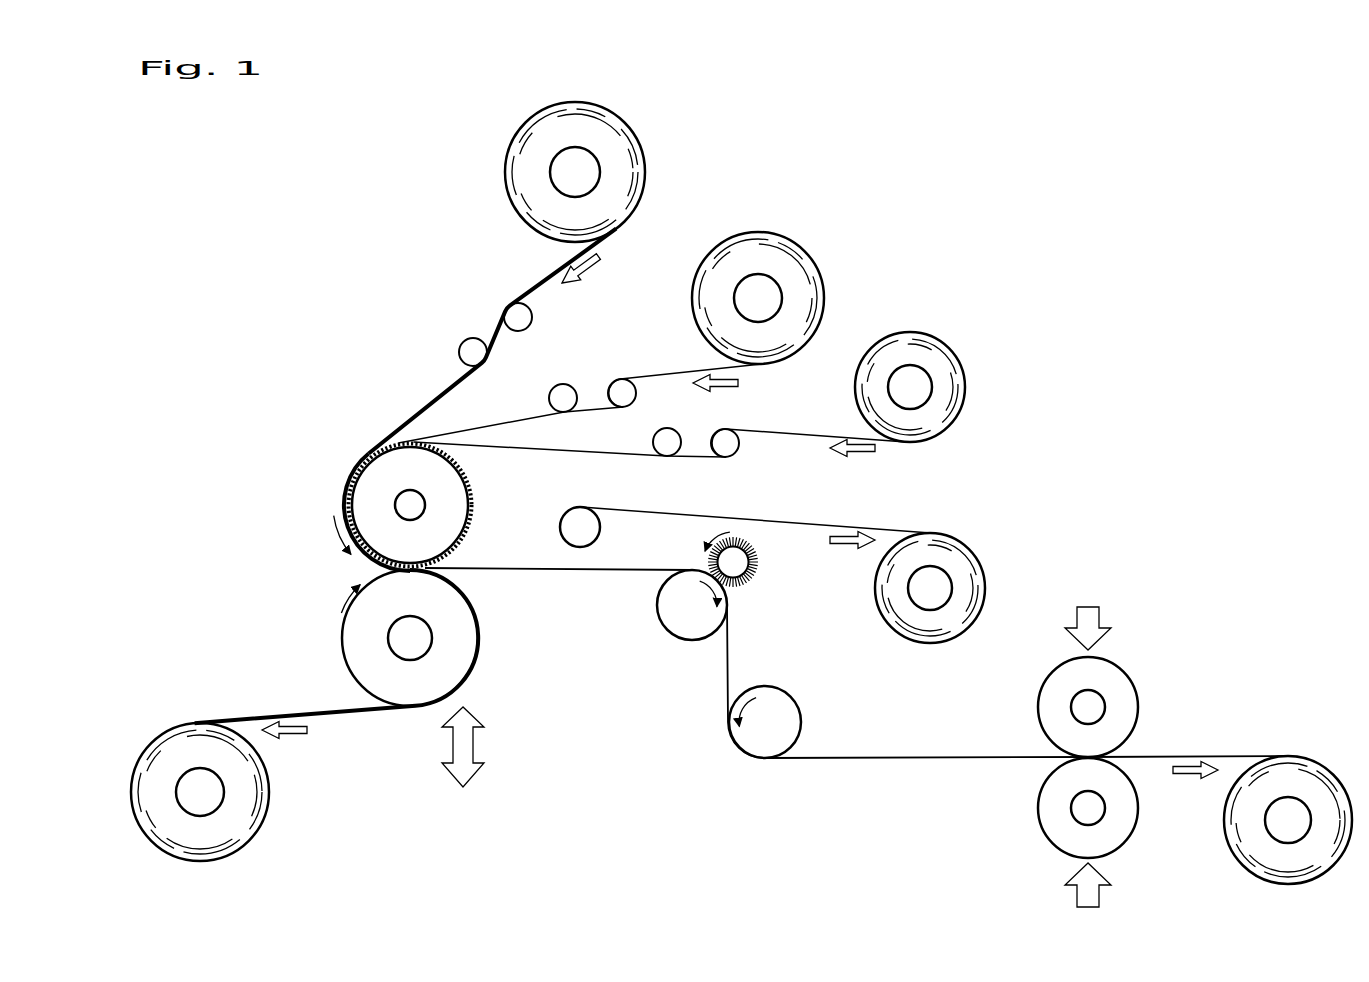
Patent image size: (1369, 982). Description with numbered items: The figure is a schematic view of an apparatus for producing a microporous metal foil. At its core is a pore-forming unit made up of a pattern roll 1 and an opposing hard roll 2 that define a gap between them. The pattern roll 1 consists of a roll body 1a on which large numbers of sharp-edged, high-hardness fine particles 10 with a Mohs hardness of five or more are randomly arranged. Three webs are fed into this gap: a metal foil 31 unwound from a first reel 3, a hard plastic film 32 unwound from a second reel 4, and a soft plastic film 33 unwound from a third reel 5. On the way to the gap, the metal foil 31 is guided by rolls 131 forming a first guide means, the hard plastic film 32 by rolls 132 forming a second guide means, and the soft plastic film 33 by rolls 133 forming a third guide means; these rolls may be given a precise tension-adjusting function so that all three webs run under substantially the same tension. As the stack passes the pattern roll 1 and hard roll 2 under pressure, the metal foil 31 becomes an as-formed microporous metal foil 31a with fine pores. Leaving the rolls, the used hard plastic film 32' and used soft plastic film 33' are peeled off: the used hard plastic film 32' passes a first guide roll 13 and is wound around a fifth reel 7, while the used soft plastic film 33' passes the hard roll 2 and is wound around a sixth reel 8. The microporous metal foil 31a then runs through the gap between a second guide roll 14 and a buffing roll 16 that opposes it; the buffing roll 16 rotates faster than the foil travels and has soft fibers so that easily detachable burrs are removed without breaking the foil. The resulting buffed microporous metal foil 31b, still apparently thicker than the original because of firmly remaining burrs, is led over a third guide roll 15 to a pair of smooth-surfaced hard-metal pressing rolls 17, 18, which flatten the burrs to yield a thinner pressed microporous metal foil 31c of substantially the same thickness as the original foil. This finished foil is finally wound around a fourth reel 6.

The pattern roll 1 is at (481, 476).
The roll body 1a is at (368, 491).
The high-hardness fine particles 10 is at (472, 507).
The hard roll 2 is at (357, 636).
The first reel 3 is at (765, 308).
The second reel 4 is at (915, 400).
The third reel 5 is at (578, 186).
The fourth reel 6 is at (1290, 815).
The fifth reel 7 is at (935, 596).
The sixth reel 8 is at (205, 793).
The first guide roll 13 is at (594, 527).
The second guide roll 14 is at (677, 620).
The third guide roll 15 is at (797, 707).
The buffing roll 16 is at (754, 566).
The pressing roll 17 is at (1117, 690).
The pressing roll 18 is at (1125, 818).
The metal foil 31 is at (648, 375).
The microporous metal foil 31a is at (547, 572).
The buffed microporous metal foil 31b is at (918, 760).
The pressed microporous metal foil 31c is at (1210, 755).
The hard plastic film 32 is at (660, 419).
The used hard plastic film 32' is at (758, 509).
The soft plastic film 33 is at (492, 341).
The used soft plastic film 33' is at (337, 654).
The rolls constituting first guide means 131 is at (620, 390).
The rolls constituting second guide means 132 is at (724, 450).
The rolls constituting third guide means 133 is at (514, 320).